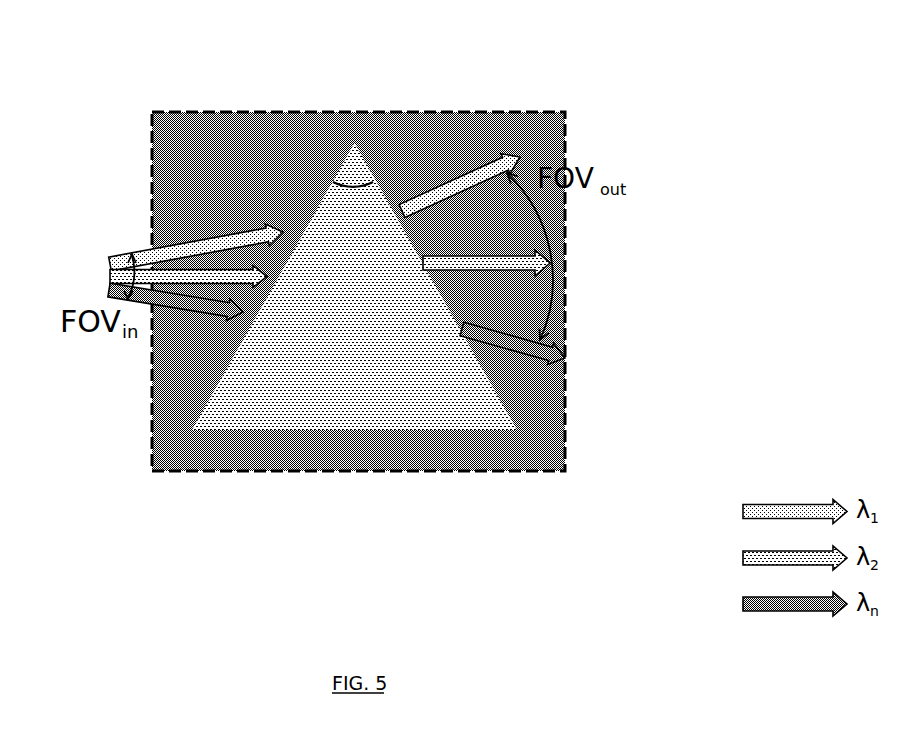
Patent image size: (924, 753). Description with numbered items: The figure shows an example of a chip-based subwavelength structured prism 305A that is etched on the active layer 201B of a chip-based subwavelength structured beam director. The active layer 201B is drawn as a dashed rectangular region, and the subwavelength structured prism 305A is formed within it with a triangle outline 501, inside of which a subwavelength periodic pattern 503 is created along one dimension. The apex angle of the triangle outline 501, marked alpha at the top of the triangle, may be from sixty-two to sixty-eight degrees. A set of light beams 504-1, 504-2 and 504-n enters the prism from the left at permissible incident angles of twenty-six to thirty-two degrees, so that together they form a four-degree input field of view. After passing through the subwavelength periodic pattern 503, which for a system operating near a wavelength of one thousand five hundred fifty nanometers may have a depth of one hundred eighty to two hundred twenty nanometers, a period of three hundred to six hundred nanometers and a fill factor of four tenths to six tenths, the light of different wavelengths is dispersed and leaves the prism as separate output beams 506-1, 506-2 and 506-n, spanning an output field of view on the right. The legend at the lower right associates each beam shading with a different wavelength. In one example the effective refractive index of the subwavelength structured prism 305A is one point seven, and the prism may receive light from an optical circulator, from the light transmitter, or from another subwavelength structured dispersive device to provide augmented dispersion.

The active layer 201B is at (240, 130).
The triangle outline 501 is at (317, 432).
The subwavelength periodic pattern 503 is at (428, 405).
The subwavelength structured prism 305A is at (383, 152).
The light beam 504-1 is at (172, 255).
The light beam 504-2 is at (152, 285).
The light beam 504-n is at (215, 300).
The first output light beam 506-1 is at (516, 150).
The second output light beam 506-2 is at (552, 268).
The nth output light beam 506-n is at (566, 360).